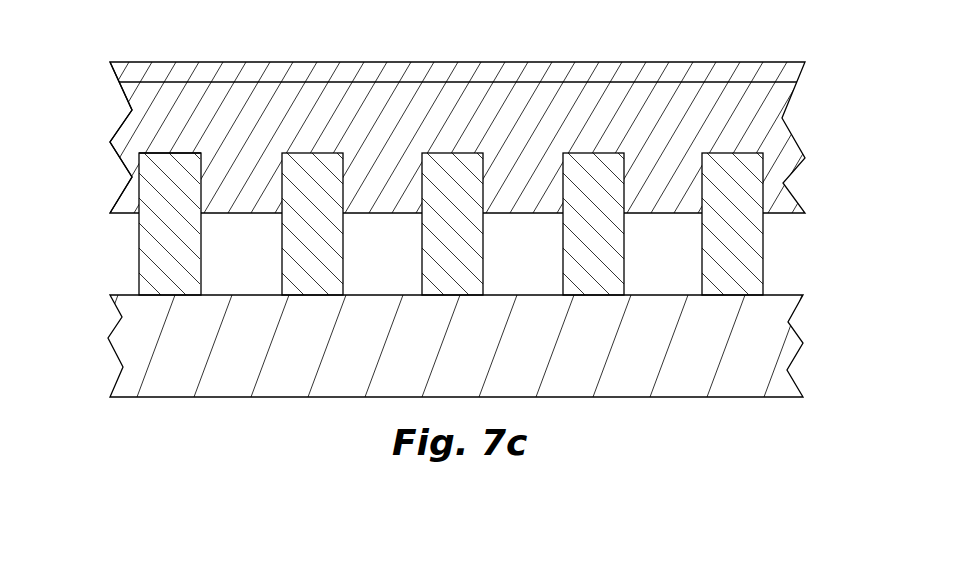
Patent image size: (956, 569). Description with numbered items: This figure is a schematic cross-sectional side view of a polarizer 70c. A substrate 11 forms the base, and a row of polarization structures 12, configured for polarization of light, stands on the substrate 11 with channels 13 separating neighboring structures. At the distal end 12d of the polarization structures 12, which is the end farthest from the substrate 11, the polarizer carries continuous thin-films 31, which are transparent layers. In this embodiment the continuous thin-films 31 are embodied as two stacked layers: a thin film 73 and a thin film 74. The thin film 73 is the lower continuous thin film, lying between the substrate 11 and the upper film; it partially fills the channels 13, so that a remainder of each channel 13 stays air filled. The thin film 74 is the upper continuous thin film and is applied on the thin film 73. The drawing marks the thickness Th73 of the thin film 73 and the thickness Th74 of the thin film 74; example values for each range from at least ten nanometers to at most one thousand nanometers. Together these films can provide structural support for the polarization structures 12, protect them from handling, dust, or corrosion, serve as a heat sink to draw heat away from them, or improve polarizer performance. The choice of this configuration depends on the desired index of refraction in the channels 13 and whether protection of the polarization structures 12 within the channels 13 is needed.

The substrate 11 is at (444, 362).
The polarization structures 12 is at (184, 238).
The distal end 12d is at (183, 155).
The channels 13 is at (452, 247).
The continuous thin-film 31 is at (118, 73).
The polarizer 70c is at (74, 378).
The thin film 73 is at (465, 130).
The thin film 74 is at (792, 73).
The thickness of thin film 74 Th74 is at (245, 113).
The thickness of thin film 73 Th73 is at (313, 103).